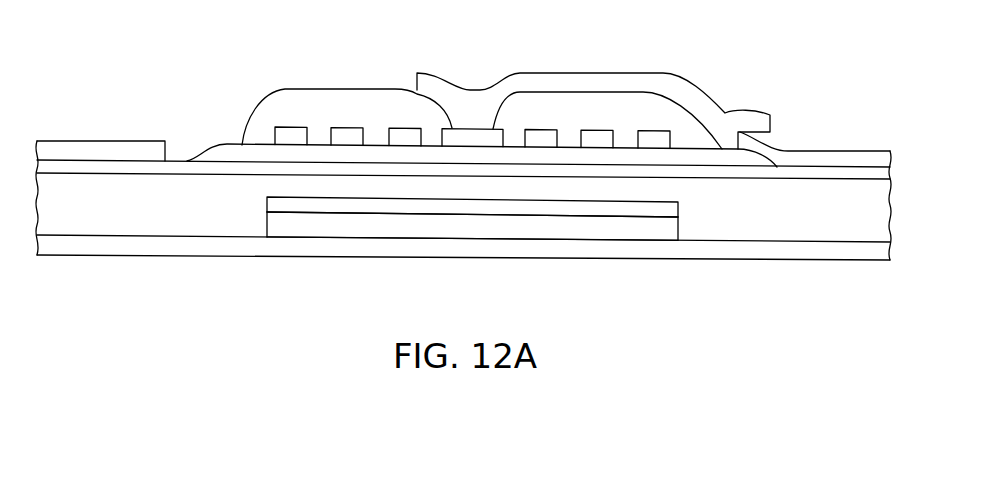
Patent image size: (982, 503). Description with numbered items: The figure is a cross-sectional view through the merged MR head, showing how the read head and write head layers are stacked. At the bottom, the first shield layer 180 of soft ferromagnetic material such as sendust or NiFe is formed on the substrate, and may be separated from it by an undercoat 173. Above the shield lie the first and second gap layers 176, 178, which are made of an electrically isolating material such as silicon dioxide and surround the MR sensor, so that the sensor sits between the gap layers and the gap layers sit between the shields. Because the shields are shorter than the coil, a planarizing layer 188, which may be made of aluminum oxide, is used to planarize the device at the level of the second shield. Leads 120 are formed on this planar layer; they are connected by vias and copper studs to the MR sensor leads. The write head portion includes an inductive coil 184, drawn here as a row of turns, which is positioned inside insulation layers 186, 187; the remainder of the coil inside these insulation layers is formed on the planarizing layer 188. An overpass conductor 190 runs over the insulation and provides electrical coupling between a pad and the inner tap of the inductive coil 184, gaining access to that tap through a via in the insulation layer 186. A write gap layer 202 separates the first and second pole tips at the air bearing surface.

The leads 120 is at (103, 147).
The undercoat 173 is at (838, 255).
The first gap layer 176 is at (472, 218).
The second gap layer 178 is at (600, 208).
The first shield layer 180 is at (365, 230).
The inductive coil 184 is at (291, 127).
The insulation layer 186 is at (685, 157).
The insulation layer 187 is at (370, 103).
The planarizing layer 188 is at (173, 210).
The overpass conductor 190 is at (563, 80).
The write gap layer 202 is at (735, 175).